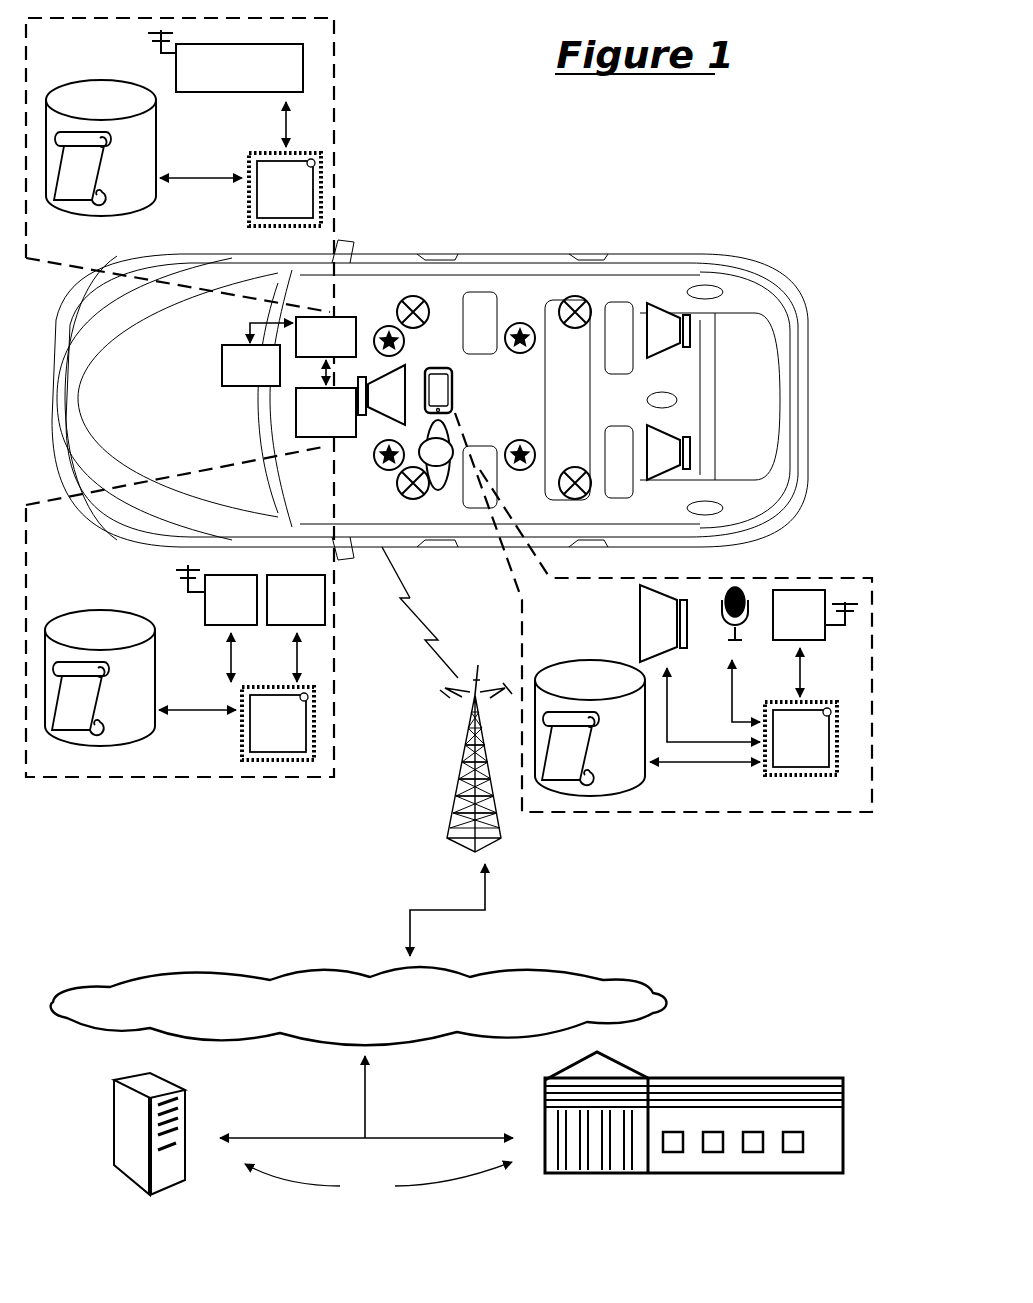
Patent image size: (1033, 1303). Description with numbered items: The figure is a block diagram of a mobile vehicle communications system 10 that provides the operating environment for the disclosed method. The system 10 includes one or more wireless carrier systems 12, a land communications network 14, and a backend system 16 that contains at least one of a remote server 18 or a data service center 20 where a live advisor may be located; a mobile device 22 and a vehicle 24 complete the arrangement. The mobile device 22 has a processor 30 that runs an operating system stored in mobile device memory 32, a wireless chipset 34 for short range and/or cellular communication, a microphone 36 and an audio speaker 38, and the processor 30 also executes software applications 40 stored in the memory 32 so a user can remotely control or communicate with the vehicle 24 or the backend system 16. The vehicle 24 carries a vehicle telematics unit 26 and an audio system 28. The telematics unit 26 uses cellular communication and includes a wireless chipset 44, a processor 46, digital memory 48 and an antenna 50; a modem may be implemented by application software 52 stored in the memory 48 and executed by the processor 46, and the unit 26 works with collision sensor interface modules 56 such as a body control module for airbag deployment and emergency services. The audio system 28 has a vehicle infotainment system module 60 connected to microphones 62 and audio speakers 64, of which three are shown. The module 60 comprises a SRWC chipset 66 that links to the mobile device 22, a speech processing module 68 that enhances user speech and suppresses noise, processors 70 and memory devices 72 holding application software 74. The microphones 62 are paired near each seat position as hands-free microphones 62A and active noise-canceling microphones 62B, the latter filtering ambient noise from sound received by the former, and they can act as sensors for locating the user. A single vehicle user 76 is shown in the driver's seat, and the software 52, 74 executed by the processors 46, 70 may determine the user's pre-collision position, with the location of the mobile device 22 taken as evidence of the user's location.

The mobile vehicle communications system 10 is at (742, 172).
The wireless carrier system 12 is at (463, 750).
The land communications network 14 is at (361, 1022).
The backend system 16 is at (366, 1167).
The remote server 18 is at (113, 1095).
The data service center 20 is at (545, 1100).
The mobile device 22 is at (458, 388).
The vehicle 24 is at (767, 260).
The vehicle telematics unit 26 is at (315, 347).
The audio system 28 is at (372, 313).
The processor 30 is at (790, 749).
The mobile device memory 32 is at (579, 699).
The wireless chipset 34 is at (788, 625).
The microphone 36 is at (732, 635).
The audio speaker 38 is at (645, 636).
The software applications 40 is at (555, 766).
The wireless chipset 44 is at (229, 79).
The processor 46 is at (274, 202).
The digital memory device 48 is at (90, 119).
The antenna 50 is at (161, 56).
The application software 52 is at (69, 188).
The collision sensor interface module 56 is at (240, 375).
The vehicle infotainment system module 60 is at (315, 422).
The microphones 62 is at (536, 358).
The hands-free microphones 62A is at (388, 323).
The active noise-canceling microphones 62B is at (413, 294).
The audio speakers 64 is at (378, 405).
The SRWC chipset 66 is at (220, 610).
The speech processing module 68 is at (285, 610).
The processors 70 is at (267, 734).
The memory devices 72 is at (89, 649).
The application software 74 is at (67, 716).
The vehicle user 76 is at (446, 492).